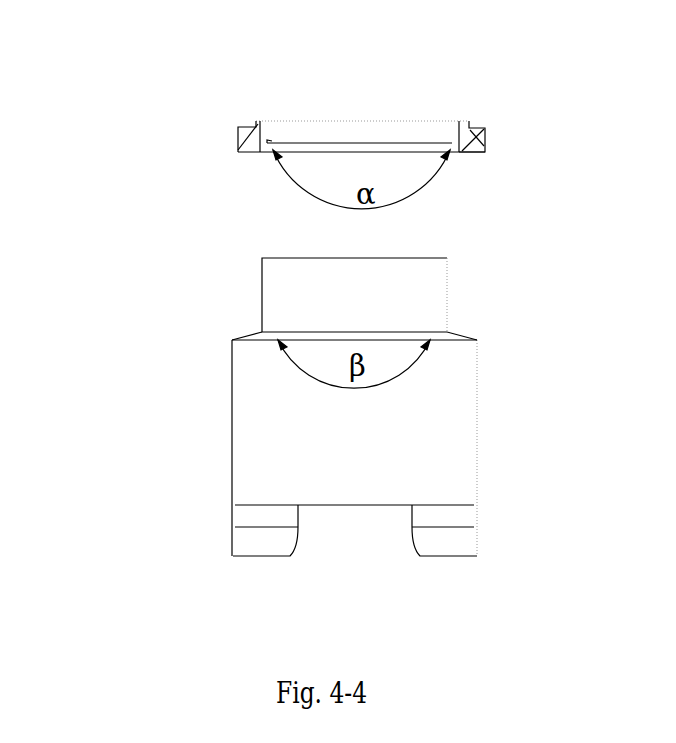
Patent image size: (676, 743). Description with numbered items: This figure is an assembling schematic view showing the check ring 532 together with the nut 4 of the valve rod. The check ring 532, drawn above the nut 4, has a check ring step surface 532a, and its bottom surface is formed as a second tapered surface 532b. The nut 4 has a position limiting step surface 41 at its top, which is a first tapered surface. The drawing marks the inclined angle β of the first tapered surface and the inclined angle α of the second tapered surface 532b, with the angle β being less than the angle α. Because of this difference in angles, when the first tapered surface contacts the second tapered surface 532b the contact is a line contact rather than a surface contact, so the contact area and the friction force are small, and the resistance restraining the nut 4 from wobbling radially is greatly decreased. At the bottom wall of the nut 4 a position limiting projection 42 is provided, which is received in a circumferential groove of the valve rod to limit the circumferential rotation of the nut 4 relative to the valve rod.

The check ring 532 is at (240, 135).
The check ring step surface 532a is at (250, 128).
The second tapered surface 532b is at (262, 140).
The nut 4 is at (297, 448).
The position limiting step surface 41 is at (250, 335).
The position limiting projection 42 is at (243, 525).